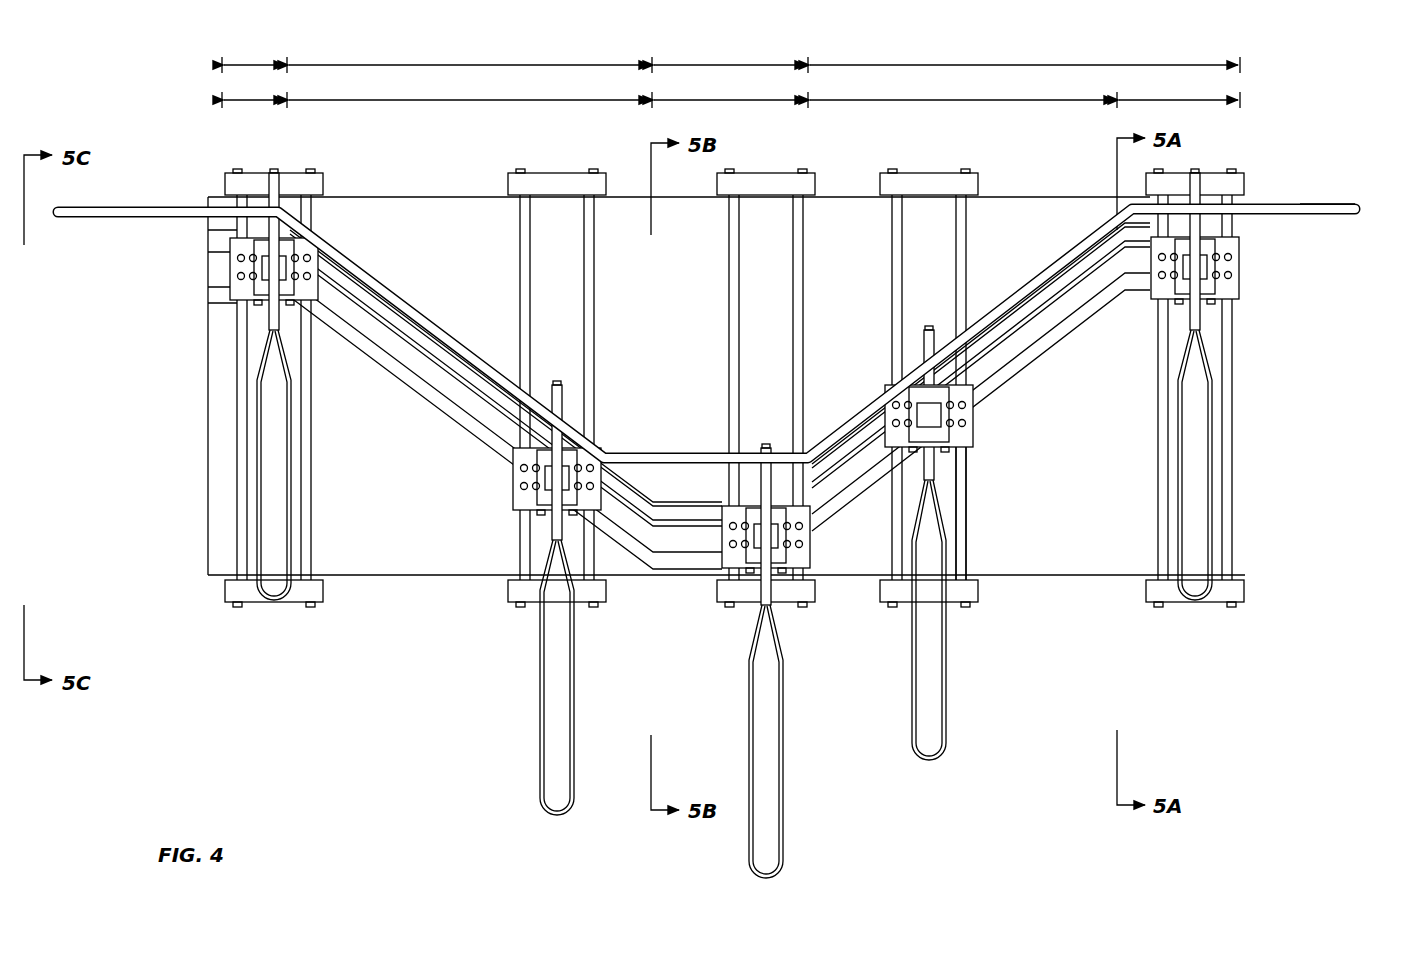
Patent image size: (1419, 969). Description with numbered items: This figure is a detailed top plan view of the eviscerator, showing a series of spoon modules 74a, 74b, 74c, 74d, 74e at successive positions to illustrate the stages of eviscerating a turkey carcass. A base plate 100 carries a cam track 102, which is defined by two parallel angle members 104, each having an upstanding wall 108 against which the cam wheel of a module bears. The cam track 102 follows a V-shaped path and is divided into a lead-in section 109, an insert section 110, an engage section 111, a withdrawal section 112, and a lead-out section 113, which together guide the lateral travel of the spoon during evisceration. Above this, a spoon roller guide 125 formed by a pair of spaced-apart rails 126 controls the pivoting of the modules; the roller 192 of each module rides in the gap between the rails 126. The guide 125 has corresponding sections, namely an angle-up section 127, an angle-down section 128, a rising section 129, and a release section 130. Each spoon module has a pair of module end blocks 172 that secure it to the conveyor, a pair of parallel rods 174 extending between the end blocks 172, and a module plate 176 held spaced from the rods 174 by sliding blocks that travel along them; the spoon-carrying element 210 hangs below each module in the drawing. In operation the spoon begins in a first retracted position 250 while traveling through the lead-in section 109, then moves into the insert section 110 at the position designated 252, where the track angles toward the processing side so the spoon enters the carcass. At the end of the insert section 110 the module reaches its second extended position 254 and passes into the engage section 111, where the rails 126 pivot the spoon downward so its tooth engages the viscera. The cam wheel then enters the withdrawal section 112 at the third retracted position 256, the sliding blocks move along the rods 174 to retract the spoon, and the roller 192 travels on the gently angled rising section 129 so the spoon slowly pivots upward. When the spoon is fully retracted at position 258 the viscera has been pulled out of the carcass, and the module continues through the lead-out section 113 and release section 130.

The release section 130 is at (254, 52).
The rising section 129 is at (469, 52).
The angle-down section 128 is at (730, 52).
The angle-up section 127 is at (1024, 52).
The lead-out section 113 is at (254, 87).
The withdrawal section 112 is at (469, 87).
The engage section 111 is at (730, 87).
The insert section 110 is at (962, 87).
The lead-in section 109 is at (1178, 87).
The spoon module 74a is at (1243, 369).
The spoon module 74b is at (966, 379).
The spoon module 74c is at (854, 499).
The spoon module 74d is at (685, 468).
The spoon module 74e is at (239, 364).
The base plate 100 is at (1040, 239).
The cam track 102 is at (1085, 344).
The angle member 104 is at (1053, 362).
The upstanding wall 108 is at (985, 402).
The spoon roller guide 125 is at (1318, 232).
The rail 126 is at (1305, 205).
The module end block 172 is at (900, 185).
The rod 174 is at (895, 285).
The module plate 176 is at (968, 430).
The roller 192 is at (562, 393).
The hanger loop 210 is at (787, 708).
The first retracted position 250 is at (1262, 278).
The insert section position 252 is at (977, 548).
The second extended position 254 is at (710, 565).
The third retracted position 256 is at (500, 480).
The fully retracted position 258 is at (183, 278).